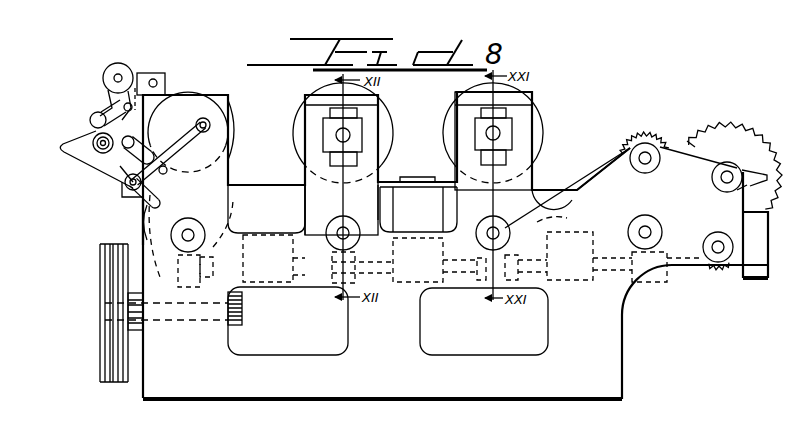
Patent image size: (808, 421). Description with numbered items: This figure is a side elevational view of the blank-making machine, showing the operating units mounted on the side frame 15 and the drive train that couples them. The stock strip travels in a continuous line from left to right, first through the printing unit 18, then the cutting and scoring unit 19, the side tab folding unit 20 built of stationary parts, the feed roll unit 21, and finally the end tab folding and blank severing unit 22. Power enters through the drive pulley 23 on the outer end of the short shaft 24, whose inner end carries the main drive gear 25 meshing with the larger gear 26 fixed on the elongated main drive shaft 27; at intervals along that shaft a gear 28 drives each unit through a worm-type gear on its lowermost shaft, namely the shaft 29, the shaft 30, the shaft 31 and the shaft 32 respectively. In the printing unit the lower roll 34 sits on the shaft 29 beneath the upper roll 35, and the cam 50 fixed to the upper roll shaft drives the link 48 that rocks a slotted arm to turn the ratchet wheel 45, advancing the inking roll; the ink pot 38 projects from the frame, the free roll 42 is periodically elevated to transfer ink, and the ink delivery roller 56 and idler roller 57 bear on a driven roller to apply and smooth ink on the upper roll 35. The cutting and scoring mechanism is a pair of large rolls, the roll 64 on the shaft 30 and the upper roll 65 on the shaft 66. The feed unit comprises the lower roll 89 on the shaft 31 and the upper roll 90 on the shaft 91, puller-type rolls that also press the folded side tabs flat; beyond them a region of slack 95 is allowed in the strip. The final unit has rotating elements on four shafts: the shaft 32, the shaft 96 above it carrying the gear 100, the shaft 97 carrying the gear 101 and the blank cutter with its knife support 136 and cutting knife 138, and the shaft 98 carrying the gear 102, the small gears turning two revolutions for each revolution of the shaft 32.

The side frame 15 is at (604, 336).
The printing unit 18 is at (191, 86).
The cutting and scoring unit 19 is at (308, 92).
The side tab folding unit 20 is at (419, 177).
The feed roll unit 21 is at (540, 104).
The end tab folding and blank severing unit 22 is at (675, 146).
The drive pulley 23 is at (113, 281).
The short shaft 24 is at (172, 313).
The main drive gear 25 is at (241, 321).
The larger gear 26 is at (242, 255).
The main drive shaft 27 is at (300, 262).
The gear 28 is at (476, 308).
The shaft 29 is at (189, 226).
The shaft 30 is at (347, 224).
The shaft 31 is at (528, 190).
The shaft 32 is at (649, 226).
The lower roll 34 is at (143, 224).
The upper roll 35 is at (228, 149).
The ink pot 38 is at (72, 151).
The free roll 42 is at (91, 119).
The ratchet wheel 45 is at (100, 153).
The link 48 is at (196, 124).
The cam 50 is at (191, 106).
The ink delivery roller 56 is at (154, 79).
The idler roller 57 is at (118, 74).
The roll 64 is at (302, 220).
The upper roll 65 is at (305, 104).
The shaft 66 is at (330, 134).
The lower roll 89 is at (560, 217).
The upper roll 90 is at (537, 128).
The shaft 91 is at (501, 135).
The region of slack 95 is at (558, 181).
The shaft 96 is at (645, 150).
The shaft 97 is at (731, 170).
The shaft 98 is at (715, 240).
The gear 100 is at (625, 143).
The gear 101 is at (711, 136).
The gear 102 is at (722, 270).
The knife support 136 is at (747, 188).
The cutting knife 138 is at (761, 175).